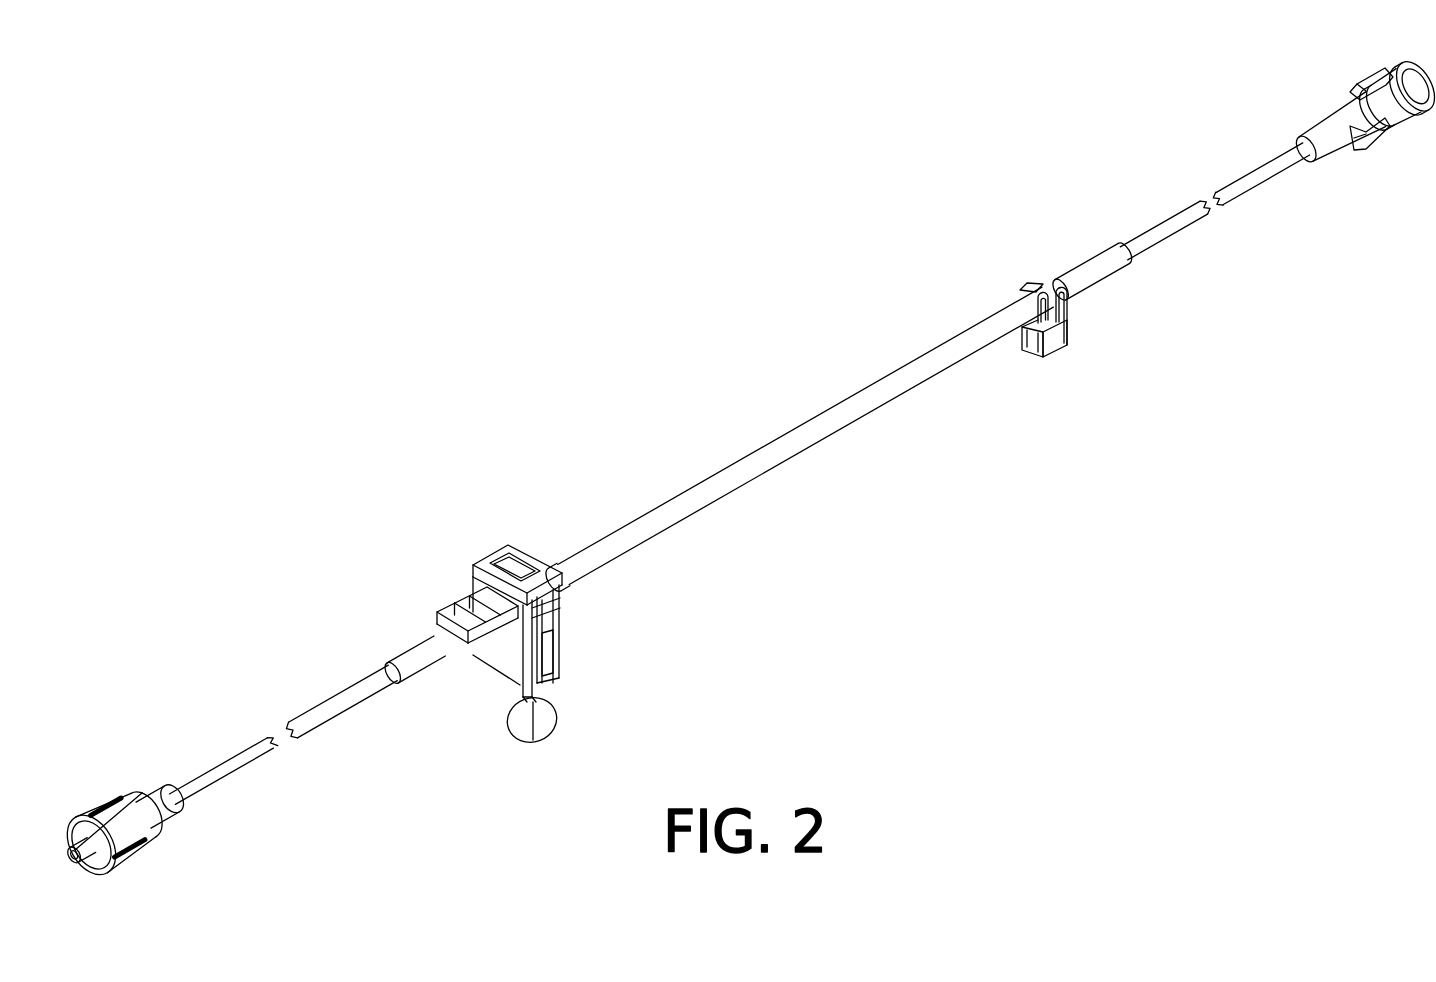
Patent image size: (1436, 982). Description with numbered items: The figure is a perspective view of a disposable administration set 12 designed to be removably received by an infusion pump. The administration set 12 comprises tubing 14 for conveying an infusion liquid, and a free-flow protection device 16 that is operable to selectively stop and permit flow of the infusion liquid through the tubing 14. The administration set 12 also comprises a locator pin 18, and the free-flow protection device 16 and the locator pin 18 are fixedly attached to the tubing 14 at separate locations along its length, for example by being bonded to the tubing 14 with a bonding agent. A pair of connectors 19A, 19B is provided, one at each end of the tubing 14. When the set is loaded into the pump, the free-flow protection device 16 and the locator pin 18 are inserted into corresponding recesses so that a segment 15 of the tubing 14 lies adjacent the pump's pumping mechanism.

The administration set 12 is at (646, 270).
The tubing 14 is at (350, 693).
The segment 15 is at (790, 443).
The free-flow protection device 16 is at (493, 548).
The locator pin 18 is at (1068, 330).
The connector 19A is at (101, 803).
The connector 19B is at (1347, 117).